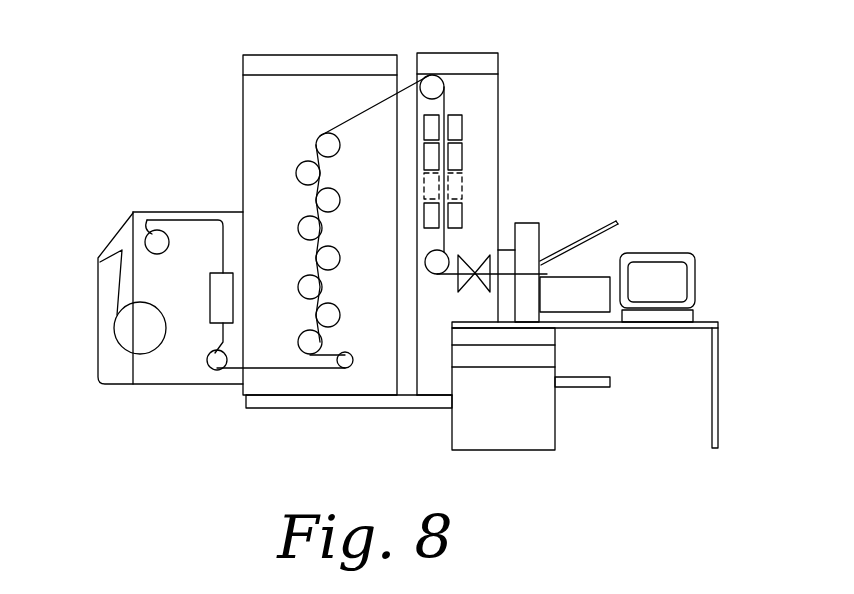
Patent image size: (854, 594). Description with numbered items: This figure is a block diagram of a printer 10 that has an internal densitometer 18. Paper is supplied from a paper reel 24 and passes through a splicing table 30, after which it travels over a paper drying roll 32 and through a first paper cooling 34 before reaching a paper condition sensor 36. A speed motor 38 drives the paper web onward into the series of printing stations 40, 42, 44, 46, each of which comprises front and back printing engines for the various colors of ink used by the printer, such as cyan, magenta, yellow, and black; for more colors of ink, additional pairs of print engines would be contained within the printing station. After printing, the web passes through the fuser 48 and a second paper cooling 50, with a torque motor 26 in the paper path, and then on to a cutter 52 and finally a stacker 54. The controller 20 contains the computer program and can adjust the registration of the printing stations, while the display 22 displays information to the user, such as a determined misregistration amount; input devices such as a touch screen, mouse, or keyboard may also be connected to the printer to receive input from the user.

The printer 10 is at (194, 119).
The internal densitometer 18 is at (455, 222).
The controller 20 is at (513, 410).
The display 22 is at (677, 262).
The paper reel 24 is at (140, 328).
The torque motor 26 is at (437, 268).
The splicing table 30 is at (113, 230).
The paper drying roll 32 is at (157, 215).
The paper cooling 34 is at (212, 297).
The paper condition sensor 36 is at (215, 370).
The speed motor 38 is at (352, 368).
The printing station 40 is at (310, 335).
The printing station 42 is at (328, 262).
The printing station 44 is at (308, 222).
The printing station 46 is at (328, 152).
The fuser 48 is at (457, 127).
The paper cooling 50 is at (458, 183).
The cutter 52 is at (478, 258).
The stacker 54 is at (578, 243).